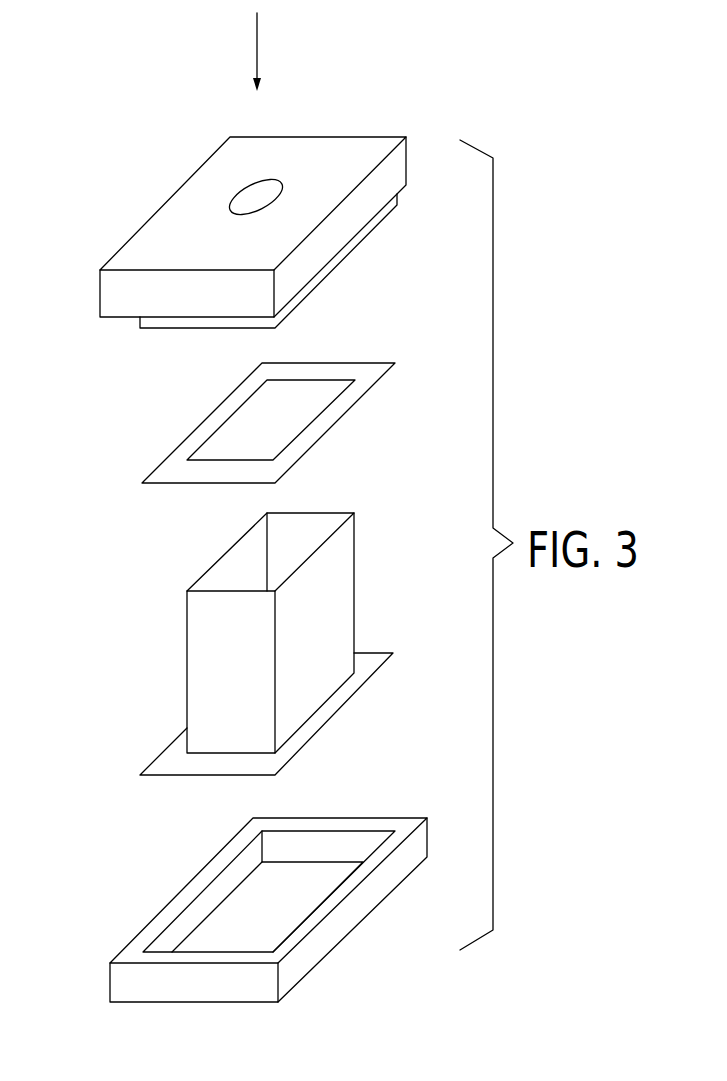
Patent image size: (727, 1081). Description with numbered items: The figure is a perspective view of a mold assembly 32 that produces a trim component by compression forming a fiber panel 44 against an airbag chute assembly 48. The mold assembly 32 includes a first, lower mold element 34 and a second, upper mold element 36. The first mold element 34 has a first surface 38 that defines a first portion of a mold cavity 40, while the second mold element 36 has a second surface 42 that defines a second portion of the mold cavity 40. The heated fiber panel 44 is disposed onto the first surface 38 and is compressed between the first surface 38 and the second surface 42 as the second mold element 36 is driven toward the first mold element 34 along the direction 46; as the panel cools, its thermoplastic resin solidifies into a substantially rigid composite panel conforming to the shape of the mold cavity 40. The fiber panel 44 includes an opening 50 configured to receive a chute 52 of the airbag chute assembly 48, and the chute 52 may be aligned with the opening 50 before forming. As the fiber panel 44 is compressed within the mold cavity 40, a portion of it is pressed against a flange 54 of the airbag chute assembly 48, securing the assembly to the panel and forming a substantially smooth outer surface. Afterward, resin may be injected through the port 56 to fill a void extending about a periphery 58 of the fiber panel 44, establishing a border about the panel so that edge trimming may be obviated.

The mold assembly 32 is at (96, 149).
The first mold element 34 is at (173, 900).
The second mold element 36 is at (165, 205).
The first surface 38 is at (258, 892).
The mold cavity 40 is at (302, 882).
The second surface 42 is at (207, 330).
The fiber panel 44 is at (328, 372).
The direction 46 is at (257, 44).
The airbag chute assembly 48 is at (360, 704).
The opening 50 is at (226, 419).
The chute 52 is at (355, 591).
The flange 54 is at (377, 670).
The port 56 is at (250, 185).
The periphery 58 is at (370, 362).